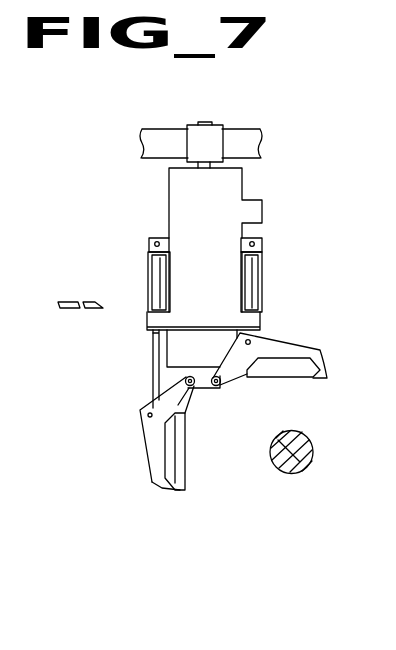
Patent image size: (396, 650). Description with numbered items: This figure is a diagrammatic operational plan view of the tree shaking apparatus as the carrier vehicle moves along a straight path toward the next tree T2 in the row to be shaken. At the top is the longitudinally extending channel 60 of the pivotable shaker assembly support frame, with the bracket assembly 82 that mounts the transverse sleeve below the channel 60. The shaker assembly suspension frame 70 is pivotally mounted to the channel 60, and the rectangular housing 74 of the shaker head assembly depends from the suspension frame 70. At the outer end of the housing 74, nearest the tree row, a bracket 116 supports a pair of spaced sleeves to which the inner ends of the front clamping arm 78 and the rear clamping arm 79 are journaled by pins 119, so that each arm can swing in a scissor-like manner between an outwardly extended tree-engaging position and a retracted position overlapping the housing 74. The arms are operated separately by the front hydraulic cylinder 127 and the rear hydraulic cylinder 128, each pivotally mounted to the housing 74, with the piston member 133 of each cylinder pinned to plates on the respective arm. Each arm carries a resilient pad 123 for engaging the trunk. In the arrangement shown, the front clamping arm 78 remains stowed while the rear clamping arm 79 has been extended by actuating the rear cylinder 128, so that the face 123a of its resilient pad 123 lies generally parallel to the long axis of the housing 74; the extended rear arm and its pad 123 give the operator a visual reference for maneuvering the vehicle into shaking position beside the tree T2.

The longitudinally extending channel 60 is at (258, 133).
The shaker assembly suspension frame 70 is at (243, 184).
The rectangular housing 74 is at (180, 347).
The front clamping arm 78 is at (321, 349).
The rear clamping arm 79 is at (147, 452).
The bracket assembly 82 is at (185, 125).
The bracket 116 is at (173, 372).
The pins 119 is at (197, 389).
The resilient pad 123 is at (316, 378).
The face of the resilient pad 123a is at (186, 457).
The front hydraulic cylinder 127 is at (260, 268).
The rear hydraulic cylinder 128 is at (153, 263).
The piston member 133 is at (150, 392).
The tree T2 is at (296, 431).